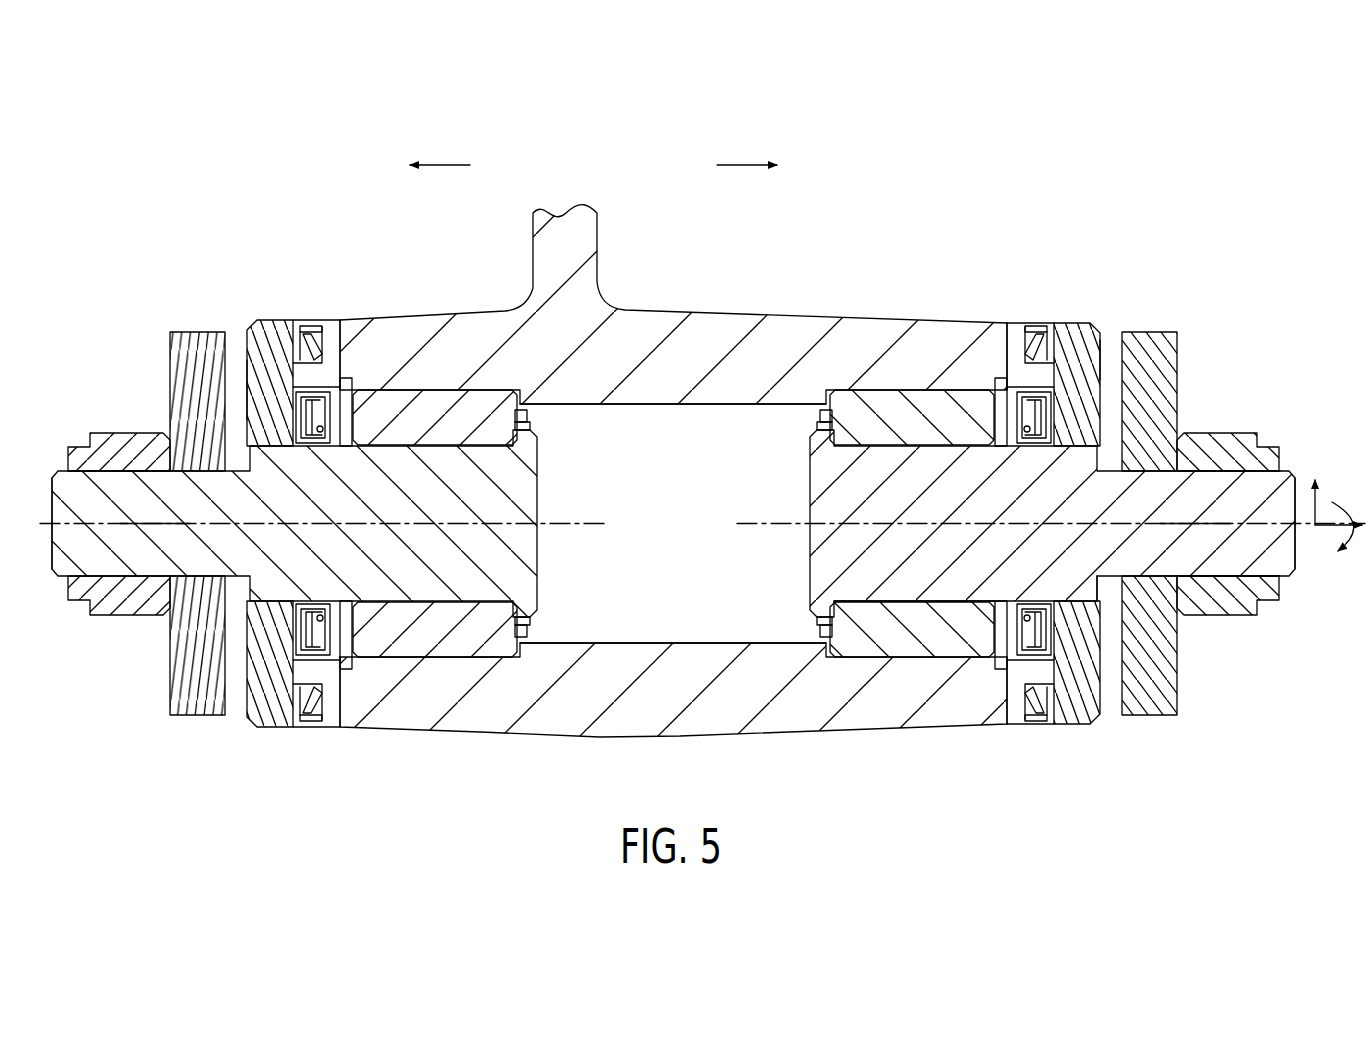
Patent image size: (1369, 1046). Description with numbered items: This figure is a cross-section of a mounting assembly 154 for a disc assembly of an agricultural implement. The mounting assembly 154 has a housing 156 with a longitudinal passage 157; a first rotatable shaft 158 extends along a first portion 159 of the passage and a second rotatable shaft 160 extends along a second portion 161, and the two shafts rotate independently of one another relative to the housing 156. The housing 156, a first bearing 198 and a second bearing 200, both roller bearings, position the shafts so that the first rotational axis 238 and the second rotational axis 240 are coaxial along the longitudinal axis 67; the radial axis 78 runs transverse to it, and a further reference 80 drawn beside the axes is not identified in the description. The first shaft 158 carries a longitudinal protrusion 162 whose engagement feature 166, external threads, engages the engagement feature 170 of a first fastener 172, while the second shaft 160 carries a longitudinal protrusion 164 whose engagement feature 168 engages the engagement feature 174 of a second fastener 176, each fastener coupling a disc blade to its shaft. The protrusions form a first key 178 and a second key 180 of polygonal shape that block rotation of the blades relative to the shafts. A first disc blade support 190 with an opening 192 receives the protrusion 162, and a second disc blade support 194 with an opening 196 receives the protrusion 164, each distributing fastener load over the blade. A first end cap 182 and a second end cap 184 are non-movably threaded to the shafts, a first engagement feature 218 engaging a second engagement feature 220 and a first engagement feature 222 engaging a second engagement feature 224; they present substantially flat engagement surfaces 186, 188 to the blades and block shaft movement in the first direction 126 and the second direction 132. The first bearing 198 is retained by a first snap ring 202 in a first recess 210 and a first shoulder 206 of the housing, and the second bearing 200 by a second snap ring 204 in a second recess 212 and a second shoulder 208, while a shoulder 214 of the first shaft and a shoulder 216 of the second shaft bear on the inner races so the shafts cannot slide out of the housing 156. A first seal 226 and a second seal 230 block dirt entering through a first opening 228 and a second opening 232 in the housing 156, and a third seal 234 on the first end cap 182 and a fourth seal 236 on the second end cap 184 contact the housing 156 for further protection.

The longitudinal axis 67 is at (1335, 527).
The radial axis 78 is at (1320, 510).
The rotation arrow 80 is at (1345, 537).
The first direction 126 is at (740, 165).
The second direction 132 is at (437, 165).
The mounting assembly 154 is at (767, 246).
The housing 156 is at (707, 312).
The longitudinal passage 157 is at (668, 428).
The first rotatable shaft 158 is at (417, 582).
The first portion 159 is at (401, 408).
The second rotatable shaft 160 is at (885, 600).
The second portion 161 is at (895, 405).
The longitudinal protrusion 162 is at (52, 483).
The longitudinal protrusion 164 is at (1294, 470).
The engagement feature 166 is at (93, 613).
The engagement feature 168 is at (1237, 577).
The engagement feature 170 is at (102, 472).
The first fastener 172 is at (107, 433).
The engagement feature 174 is at (1215, 473).
The second fastener 176 is at (1250, 433).
The first key 178 is at (230, 587).
The second key 180 is at (1135, 635).
The first end cap 182 is at (283, 326).
The second end cap 184 is at (1075, 326).
The substantially flat engagement surface 186 is at (257, 394).
The substantially flat engagement surface 188 is at (1107, 360).
The first disc blade support 190 is at (192, 332).
The opening 192 is at (300, 617).
The second disc blade support 194 is at (1150, 332).
The opening 196 is at (1147, 573).
The first bearing 198 is at (458, 412).
The second bearing 200 is at (932, 400).
The first snap ring 202 is at (336, 392).
The second snap ring 204 is at (985, 383).
The first shoulder 206 is at (486, 385).
The second shoulder 208 is at (858, 385).
The first recess 210 is at (330, 660).
The second recess 212 is at (1003, 670).
The shoulder 214 is at (510, 625).
The shoulder 216 is at (873, 585).
The first engagement feature 218 is at (290, 597).
The second engagement feature 220 is at (296, 430).
The first engagement feature 222 is at (1053, 600).
The second engagement feature 224 is at (1065, 430).
The first seal 226 is at (330, 660).
The first opening 228 is at (296, 400).
The second seal 230 is at (1063, 707).
The second opening 232 is at (1065, 400).
The third seal 234 is at (315, 326).
The fourth seal 236 is at (1043, 375).
The first rotational axis 238 is at (155, 525).
The second rotational axis 240 is at (1192, 525).